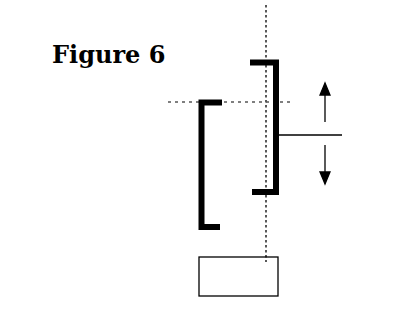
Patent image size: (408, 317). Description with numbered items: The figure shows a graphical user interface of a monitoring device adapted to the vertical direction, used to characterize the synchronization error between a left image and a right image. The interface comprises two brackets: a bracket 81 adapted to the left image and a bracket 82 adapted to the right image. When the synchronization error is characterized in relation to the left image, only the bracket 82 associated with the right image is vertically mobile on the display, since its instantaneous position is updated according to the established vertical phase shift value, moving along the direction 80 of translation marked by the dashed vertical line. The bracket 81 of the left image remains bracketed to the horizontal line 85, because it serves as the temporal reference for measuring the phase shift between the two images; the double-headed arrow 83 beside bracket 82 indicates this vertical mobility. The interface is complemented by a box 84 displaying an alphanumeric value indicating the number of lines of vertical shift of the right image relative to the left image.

The direction of translation 80 is at (268, 43).
The bracket adapted to the left image 81 is at (198, 163).
The bracket adapted to the right image 82 is at (279, 177).
The vertical adjustment arrow 83 is at (342, 136).
The box of alphanumeric values 84 is at (279, 280).
The horizontal line 85 is at (178, 106).